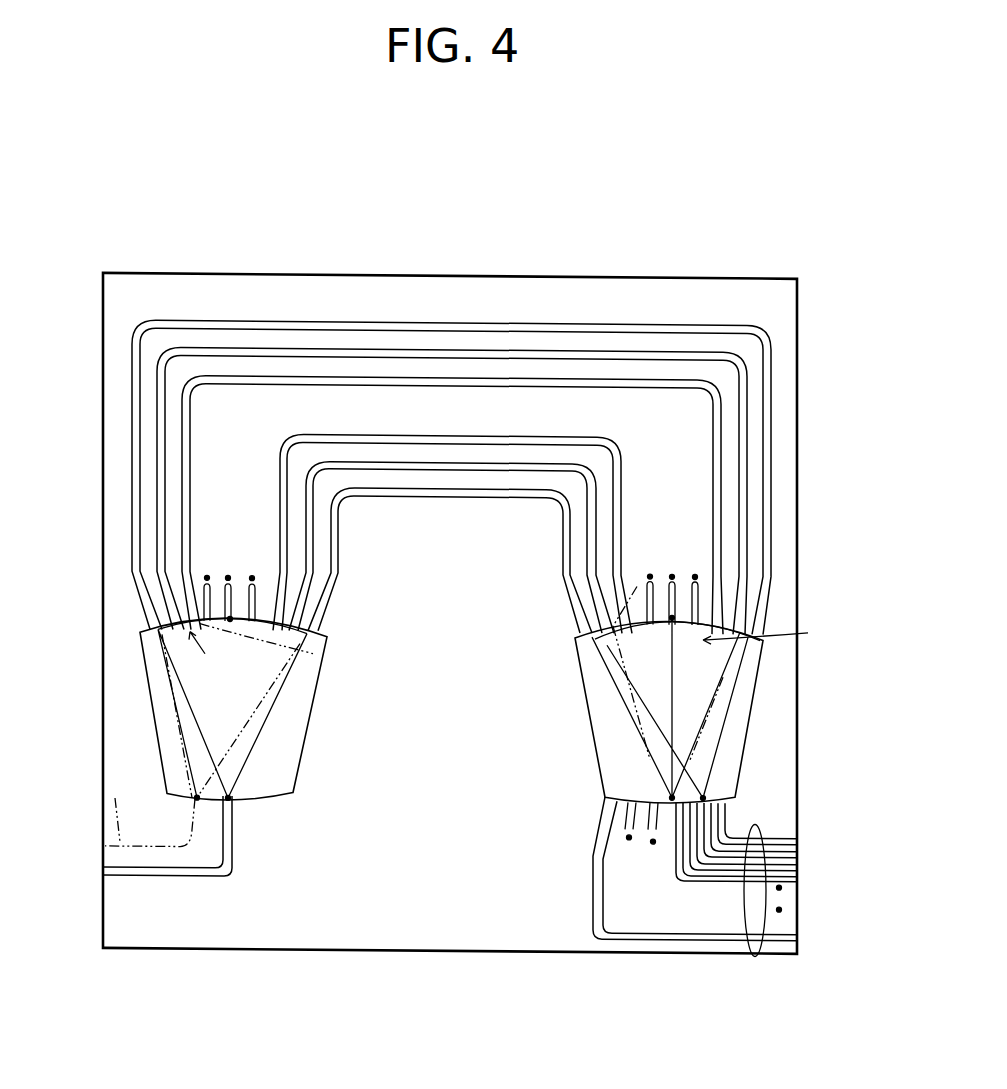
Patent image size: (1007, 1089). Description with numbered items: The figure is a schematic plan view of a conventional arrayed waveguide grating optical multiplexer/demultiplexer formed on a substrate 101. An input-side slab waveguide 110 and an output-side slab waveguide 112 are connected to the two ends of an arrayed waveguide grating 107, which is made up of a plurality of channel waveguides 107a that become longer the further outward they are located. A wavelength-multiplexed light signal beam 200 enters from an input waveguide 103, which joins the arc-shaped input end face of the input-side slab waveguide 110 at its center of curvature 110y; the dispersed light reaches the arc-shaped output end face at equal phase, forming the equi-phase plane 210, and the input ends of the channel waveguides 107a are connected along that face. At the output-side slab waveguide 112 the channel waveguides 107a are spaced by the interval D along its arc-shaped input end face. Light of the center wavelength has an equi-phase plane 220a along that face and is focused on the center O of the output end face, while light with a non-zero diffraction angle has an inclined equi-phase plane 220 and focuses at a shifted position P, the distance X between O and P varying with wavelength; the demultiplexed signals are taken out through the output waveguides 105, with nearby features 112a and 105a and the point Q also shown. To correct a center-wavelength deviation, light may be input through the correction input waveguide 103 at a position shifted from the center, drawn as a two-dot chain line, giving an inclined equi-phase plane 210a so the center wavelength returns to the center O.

The substrate 101 is at (293, 289).
The arrayed waveguide grating 107 is at (422, 504).
The channel waveguides 107a is at (517, 486).
The equi-phase plane 210 is at (272, 588).
The equi-phase plane 210a is at (318, 648).
The input-side slab waveguide 110 is at (131, 675).
The center of curvature 110y is at (238, 792).
The point Q is at (150, 822).
The input waveguide 103 is at (115, 797).
The wavelength-multiplexed light signal beam 200 is at (98, 869).
The equi-phase plane 220 is at (590, 636).
The equi-phase plane 220a is at (637, 581).
The output-side slab waveguide 112 is at (771, 672).
The interval of the channel waveguides D is at (721, 591).
The center of curvature O is at (670, 792).
The focusing position P is at (705, 792).
The distance X is at (700, 785).
The output terminals of second mounting region 112a is at (745, 803).
The output waveguides 105 is at (753, 950).
The output terminal pads 105a is at (797, 870).